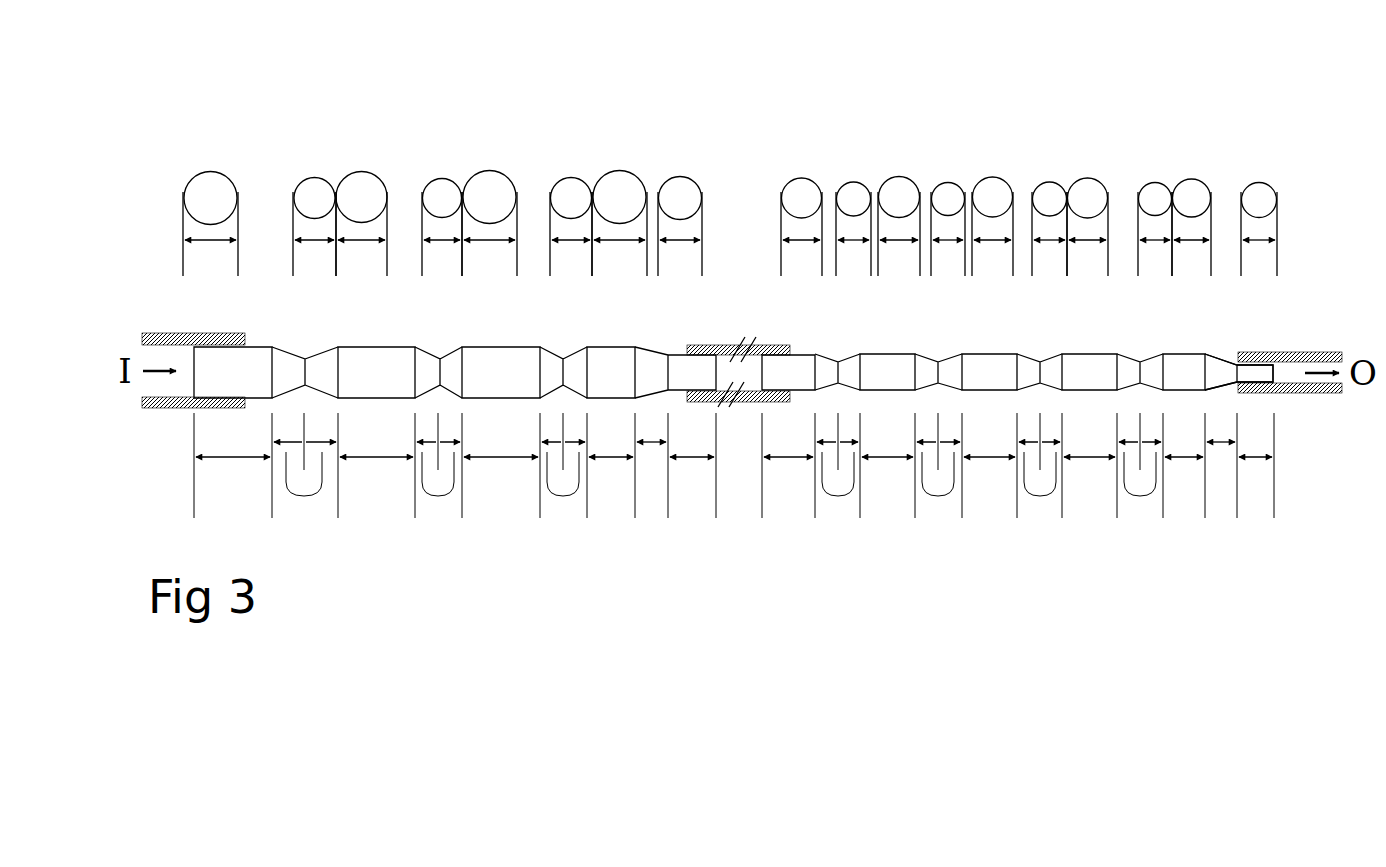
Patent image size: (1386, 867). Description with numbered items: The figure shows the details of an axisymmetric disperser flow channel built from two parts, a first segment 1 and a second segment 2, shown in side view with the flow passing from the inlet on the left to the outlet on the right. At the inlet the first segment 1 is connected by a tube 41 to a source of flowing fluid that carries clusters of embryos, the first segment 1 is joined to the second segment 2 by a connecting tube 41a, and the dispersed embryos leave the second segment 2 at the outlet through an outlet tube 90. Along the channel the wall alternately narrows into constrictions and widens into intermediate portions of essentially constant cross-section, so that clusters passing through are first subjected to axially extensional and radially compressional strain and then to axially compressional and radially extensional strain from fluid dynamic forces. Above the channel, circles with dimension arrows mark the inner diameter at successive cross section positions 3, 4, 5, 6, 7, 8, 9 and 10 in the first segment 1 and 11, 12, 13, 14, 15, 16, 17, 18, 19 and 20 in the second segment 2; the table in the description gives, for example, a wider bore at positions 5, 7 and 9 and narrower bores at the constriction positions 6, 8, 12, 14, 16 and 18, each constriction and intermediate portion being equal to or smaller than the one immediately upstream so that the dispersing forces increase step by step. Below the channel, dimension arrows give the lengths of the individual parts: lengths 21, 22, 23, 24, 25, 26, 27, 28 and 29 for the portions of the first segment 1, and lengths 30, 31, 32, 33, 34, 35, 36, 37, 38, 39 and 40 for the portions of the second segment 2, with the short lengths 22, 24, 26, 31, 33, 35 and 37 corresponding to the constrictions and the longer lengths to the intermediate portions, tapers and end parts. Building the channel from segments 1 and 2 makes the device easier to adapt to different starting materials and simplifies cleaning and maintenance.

The first segment 1 is at (253, 345).
The second segment 2 is at (1212, 353).
The cross section position 3 is at (197, 372).
The cross section position 4 is at (307, 372).
The cross section position 5 is at (340, 372).
The cross section position 6 is at (445, 367).
The cross section position 7 is at (467, 383).
The cross section position 8 is at (567, 367).
The cross section position 9 is at (588, 375).
The cross section position 10 is at (667, 373).
The cross section position 11 is at (817, 372).
The cross section position 12 is at (842, 373).
The cross section position 13 is at (917, 373).
The cross section position 14 is at (940, 373).
The cross section position 15 is at (1017, 372).
The cross section position 16 is at (1040, 368).
The cross section position 17 is at (1063, 378).
The cross section position 18 is at (1147, 370).
The cross section position 19 is at (1163, 373).
The cross section position 20 is at (1240, 373).
The length 21 is at (233, 476).
The length 22 is at (305, 479).
The length 23 is at (376, 476).
The length 24 is at (438, 479).
The length 25 is at (501, 476).
The length 26 is at (563, 479).
The length 27 is at (611, 476).
The length 28 is at (651, 479).
The length 29 is at (692, 476).
The length 30 is at (788, 476).
The length 31 is at (837, 479).
The length 32 is at (887, 476).
The length 33 is at (938, 479).
The length 34 is at (989, 476).
The length 35 is at (1039, 479).
The length 36 is at (1089, 476).
The length 37 is at (1140, 479).
The length 38 is at (1184, 476).
The length 39 is at (1221, 479).
The length 40 is at (1255, 476).
The tube 41 is at (217, 342).
The connecting tube 41a is at (715, 345).
The outlet tube 90 is at (1262, 357).